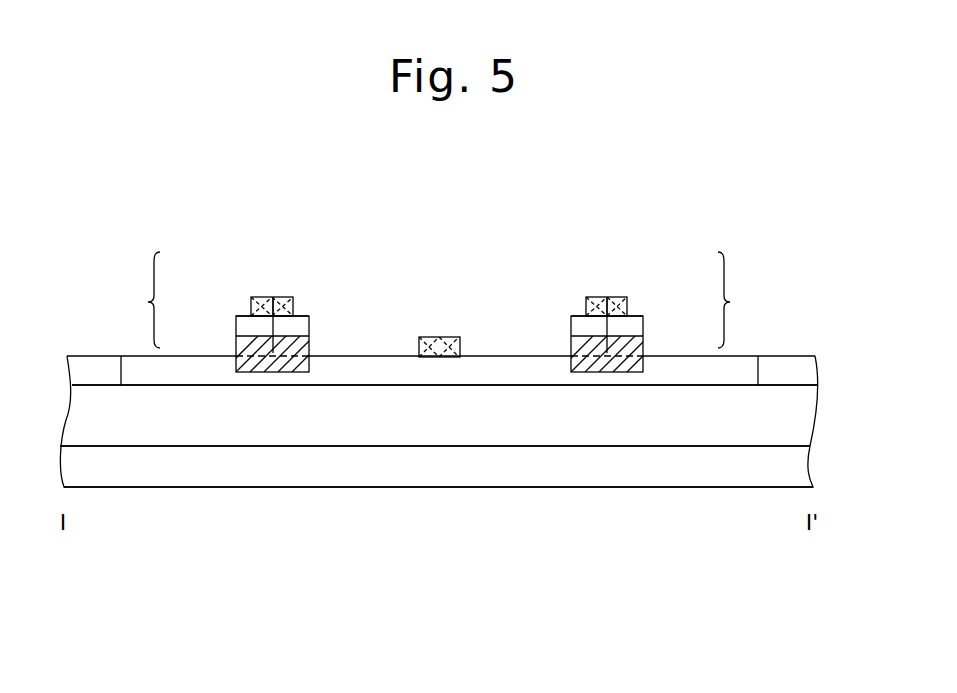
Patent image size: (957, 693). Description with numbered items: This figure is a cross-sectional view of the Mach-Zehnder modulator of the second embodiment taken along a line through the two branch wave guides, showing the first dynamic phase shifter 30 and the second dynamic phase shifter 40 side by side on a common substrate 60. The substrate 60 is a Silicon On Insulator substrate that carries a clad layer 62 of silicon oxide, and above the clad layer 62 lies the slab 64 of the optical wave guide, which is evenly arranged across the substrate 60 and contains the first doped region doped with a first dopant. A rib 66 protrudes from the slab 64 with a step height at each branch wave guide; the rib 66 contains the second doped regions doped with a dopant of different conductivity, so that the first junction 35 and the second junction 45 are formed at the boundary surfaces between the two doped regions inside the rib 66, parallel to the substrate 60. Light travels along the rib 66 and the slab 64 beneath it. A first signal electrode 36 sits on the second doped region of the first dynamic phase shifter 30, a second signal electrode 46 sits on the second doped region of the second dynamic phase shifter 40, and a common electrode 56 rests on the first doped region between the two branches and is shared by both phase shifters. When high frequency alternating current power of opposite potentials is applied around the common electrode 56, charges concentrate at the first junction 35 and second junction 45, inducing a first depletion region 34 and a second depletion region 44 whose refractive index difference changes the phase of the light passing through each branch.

The first dynamic phase shifter 30 is at (228, 305).
The first depletion region 34 is at (245, 344).
The first junction 35 is at (267, 297).
The first signal electrode 36 is at (275, 297).
The second dynamic phase shifter 40 is at (631, 305).
The second depletion region 44 is at (637, 345).
The second junction 45 is at (611, 297).
The second signal electrode 46 is at (604, 297).
The common electrode 56 is at (440, 337).
The substrate 60 is at (800, 466).
The clad layer 62 is at (805, 418).
The slab 64 is at (805, 372).
The rib 66 is at (570, 326).